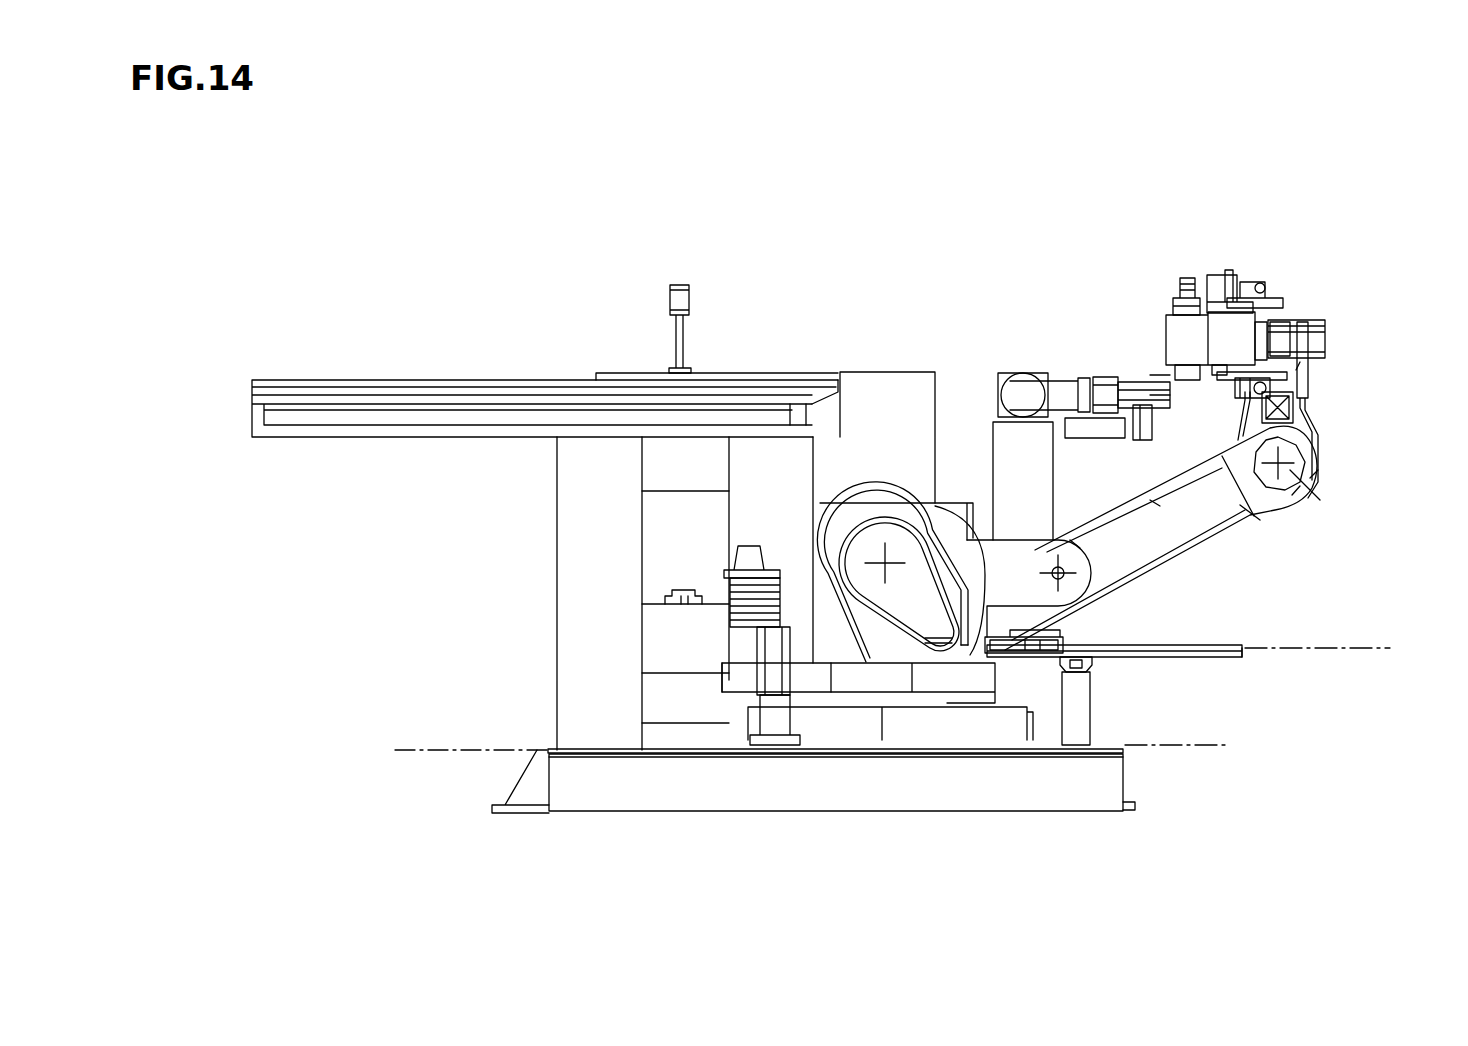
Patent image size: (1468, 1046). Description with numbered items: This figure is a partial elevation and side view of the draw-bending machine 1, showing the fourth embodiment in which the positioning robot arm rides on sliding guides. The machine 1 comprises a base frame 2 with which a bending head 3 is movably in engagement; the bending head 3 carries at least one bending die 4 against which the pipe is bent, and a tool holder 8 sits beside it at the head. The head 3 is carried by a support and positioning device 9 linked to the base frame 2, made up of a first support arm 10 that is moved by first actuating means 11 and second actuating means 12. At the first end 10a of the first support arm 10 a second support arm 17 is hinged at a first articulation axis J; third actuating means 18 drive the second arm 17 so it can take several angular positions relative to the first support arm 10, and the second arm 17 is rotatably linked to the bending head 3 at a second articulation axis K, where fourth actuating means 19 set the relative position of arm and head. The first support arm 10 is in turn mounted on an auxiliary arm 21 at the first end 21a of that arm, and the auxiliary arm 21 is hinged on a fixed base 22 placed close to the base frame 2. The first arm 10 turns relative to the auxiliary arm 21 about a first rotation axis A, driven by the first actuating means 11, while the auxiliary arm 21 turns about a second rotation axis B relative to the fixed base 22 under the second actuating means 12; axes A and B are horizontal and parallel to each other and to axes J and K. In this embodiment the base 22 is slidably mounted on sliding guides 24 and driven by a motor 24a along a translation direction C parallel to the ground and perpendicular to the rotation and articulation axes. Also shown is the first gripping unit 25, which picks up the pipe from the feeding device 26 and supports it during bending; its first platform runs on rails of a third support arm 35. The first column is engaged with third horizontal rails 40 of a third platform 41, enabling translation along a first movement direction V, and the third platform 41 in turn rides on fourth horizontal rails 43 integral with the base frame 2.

The draw-bending machine 1 is at (566, 214).
The base frame 2 is at (516, 776).
The bending head 3 is at (1163, 323).
The bending die 4 is at (1180, 300).
The tool holder 8 is at (1313, 335).
The support and positioning device 9 is at (1218, 579).
The first support arm 10 is at (1238, 538).
The first end of the first support arm 10a is at (1300, 500).
The first actuating means 11 is at (923, 615).
The second actuating means 12 is at (900, 607).
The second support arm 17 is at (1318, 414).
The third actuating means 18 is at (1302, 490).
The fourth actuating means 19 is at (1318, 458).
The auxiliary arm 21 is at (988, 532).
The first end of the auxiliary arm 21a is at (1077, 542).
The fixed base 22 is at (832, 738).
The sliding guides 24 is at (593, 747).
The motor 24a is at (773, 647).
The first gripping unit 25 is at (1138, 357).
The feeding device 26 is at (430, 380).
The third support arm 35 is at (1057, 374).
The third horizontal rails 40 is at (1210, 648).
The third platform 41 is at (1220, 658).
The fourth horizontal rails 43 is at (1085, 672).
The first rotation axis A is at (1070, 585).
The second rotation axis B is at (884, 560).
The translation direction C is at (1215, 745).
The first articulation axis J is at (1296, 496).
The second articulation axis K is at (1307, 355).
The first movement direction V is at (1312, 648).